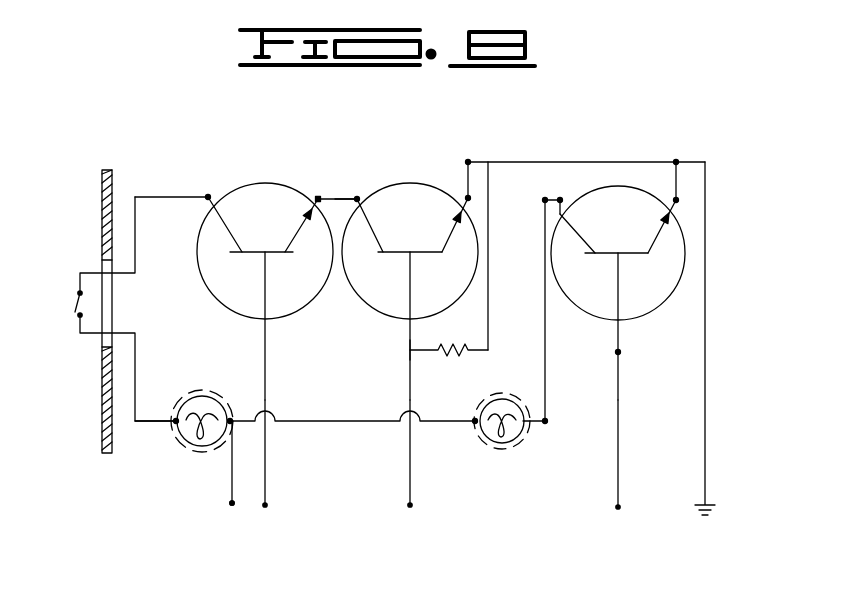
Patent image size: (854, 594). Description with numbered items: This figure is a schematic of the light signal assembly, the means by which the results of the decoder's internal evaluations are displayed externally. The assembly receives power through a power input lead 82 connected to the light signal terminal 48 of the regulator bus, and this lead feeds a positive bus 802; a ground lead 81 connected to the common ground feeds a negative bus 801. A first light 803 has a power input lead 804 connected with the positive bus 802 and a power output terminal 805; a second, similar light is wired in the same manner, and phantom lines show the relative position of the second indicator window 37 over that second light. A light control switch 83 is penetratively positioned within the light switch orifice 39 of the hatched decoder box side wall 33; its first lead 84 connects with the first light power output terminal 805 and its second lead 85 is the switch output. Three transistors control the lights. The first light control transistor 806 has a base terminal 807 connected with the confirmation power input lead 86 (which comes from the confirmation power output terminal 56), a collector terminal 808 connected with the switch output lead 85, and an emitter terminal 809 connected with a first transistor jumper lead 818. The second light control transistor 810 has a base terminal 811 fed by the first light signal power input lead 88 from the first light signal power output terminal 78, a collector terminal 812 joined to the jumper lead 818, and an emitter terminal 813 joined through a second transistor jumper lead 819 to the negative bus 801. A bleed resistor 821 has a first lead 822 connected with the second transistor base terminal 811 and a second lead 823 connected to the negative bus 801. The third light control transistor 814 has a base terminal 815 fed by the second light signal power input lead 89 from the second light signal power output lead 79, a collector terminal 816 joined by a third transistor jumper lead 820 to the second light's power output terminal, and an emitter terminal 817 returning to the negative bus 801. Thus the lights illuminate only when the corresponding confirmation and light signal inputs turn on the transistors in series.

The insulating panel 33 is at (100, 217).
The light switch orifice 39 is at (100, 347).
The light control switch 83 is at (76, 308).
The first lead 84 is at (122, 333).
The second lead 85 is at (123, 274).
The confirmation power input lead 86 is at (264, 470).
The first light signal power input lead 88 is at (410, 455).
The second light signal power input lead 89 is at (617, 463).
The confirmation power output terminal 56 is at (265, 508).
The first light signal power output terminal 78 is at (413, 508).
The second light signal power output lead 79 is at (618, 510).
The ground lead 81 is at (705, 435).
The power input lead 82 is at (229, 503).
The light signal terminal 48 is at (234, 506).
The second indicator window 37 is at (528, 440).
The negative bus 801 is at (560, 162).
The positive bus 802 is at (370, 423).
The first light 803 is at (175, 400).
The power input lead 804 is at (232, 440).
The power output terminal 805 is at (172, 450).
The first light control transistor 806 is at (235, 184).
The base terminal 807 is at (263, 350).
The collector terminal 808 is at (207, 200).
The emitter terminal 809 is at (330, 168).
The transistor 810 is at (420, 183).
The base terminal 811 is at (408, 338).
The collector terminal 812 is at (357, 196).
The emitter terminal 813 is at (460, 193).
The third light control transistor 814 is at (604, 186).
The base terminal 815 is at (620, 352).
The collector terminal 816 is at (560, 199).
The emitter terminal 817 is at (679, 203).
The first transistor jumper lead 818 is at (347, 197).
The second transistor jumper lead 819 is at (466, 160).
The third transistor jumper lead 820 is at (545, 362).
The bleed resistor 821 is at (450, 358).
The first lead 822 is at (440, 348).
The second lead 823 is at (490, 307).